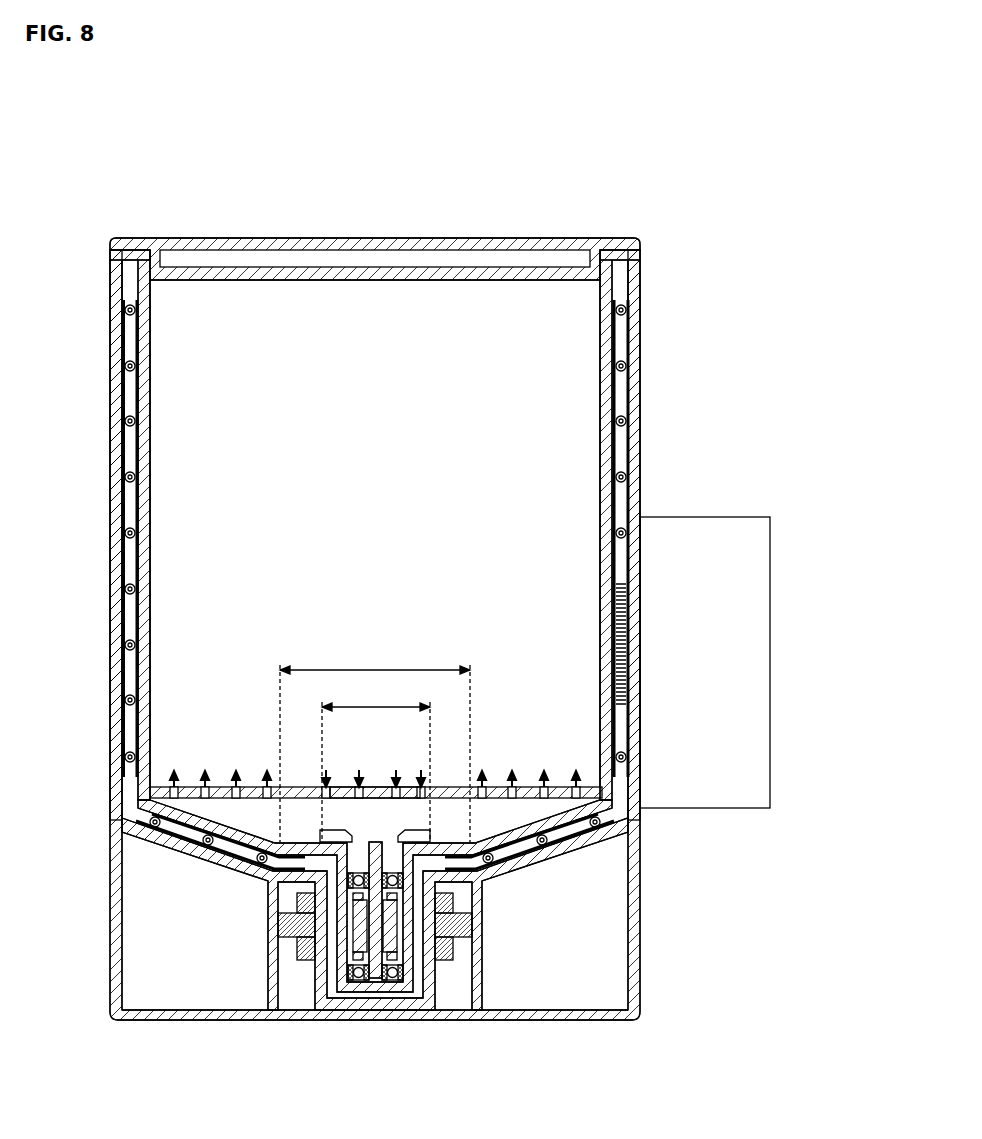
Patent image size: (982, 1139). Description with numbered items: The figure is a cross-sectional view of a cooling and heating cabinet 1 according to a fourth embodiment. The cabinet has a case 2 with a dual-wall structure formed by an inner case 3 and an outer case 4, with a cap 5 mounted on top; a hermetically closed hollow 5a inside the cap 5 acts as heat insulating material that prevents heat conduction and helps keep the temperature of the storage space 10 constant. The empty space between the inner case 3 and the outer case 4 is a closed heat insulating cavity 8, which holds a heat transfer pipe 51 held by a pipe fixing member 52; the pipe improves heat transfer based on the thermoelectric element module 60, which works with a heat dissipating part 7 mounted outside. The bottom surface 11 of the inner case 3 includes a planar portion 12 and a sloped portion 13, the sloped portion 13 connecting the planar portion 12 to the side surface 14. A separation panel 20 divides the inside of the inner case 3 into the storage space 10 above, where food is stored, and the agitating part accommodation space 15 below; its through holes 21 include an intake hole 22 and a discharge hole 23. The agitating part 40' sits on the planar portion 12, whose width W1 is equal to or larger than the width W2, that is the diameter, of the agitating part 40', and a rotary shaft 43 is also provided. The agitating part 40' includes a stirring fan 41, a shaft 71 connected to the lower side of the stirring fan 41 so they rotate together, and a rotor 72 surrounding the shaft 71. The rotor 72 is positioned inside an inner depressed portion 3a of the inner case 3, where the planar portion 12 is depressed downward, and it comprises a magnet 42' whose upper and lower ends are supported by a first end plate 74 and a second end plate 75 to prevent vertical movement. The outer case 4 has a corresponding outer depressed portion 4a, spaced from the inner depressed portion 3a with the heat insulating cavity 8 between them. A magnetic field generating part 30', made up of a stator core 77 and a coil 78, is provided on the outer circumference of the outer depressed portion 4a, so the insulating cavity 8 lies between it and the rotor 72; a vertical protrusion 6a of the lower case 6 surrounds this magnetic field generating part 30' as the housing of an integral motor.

The cooling and heating cabinet 1 is at (582, 165).
The case 2 is at (58, 398).
The inner case 3 is at (145, 410).
The outer case 4 is at (120, 430).
The cap 5 is at (397, 247).
The hollow 5a is at (302, 262).
The lower case 6 is at (120, 920).
The vertical protrusion 6a is at (478, 983).
The heat dissipating part 7 is at (741, 530).
The heat insulating cavity 8 is at (133, 796).
The storage space 10 is at (364, 440).
The bottom surface 11 is at (64, 833).
The planar portion 12 is at (270, 880).
The sloped portion 13 is at (185, 857).
The side surface 14 is at (150, 515).
The agitating part accommodation space 15 is at (528, 788).
The separation panel 20 is at (456, 782).
The through holes 21 is at (205, 708).
The intake hole 22 is at (328, 786).
The discharge hole 23 is at (208, 786).
The magnetic field generating part 30' is at (506, 930).
The inner depressed portion 3a is at (400, 905).
The agitating part 40' is at (393, 844).
The stirring fan 41 is at (432, 840).
The magnet 42' is at (265, 930).
The rotary shaft 43 is at (375, 800).
The outer depressed portion 4a is at (318, 982).
The heat transfer pipe 51 is at (627, 310).
The pipe fixing member 52 is at (630, 330).
The thermoelectric element module 60 is at (642, 630).
The shaft 71 is at (378, 978).
The rotor 72 is at (218, 905).
The first end plate 74 is at (305, 903).
The second end plate 75 is at (305, 948).
The stator core 77 is at (465, 925).
The coil 78 is at (450, 950).
The width of the planar portion W1 is at (375, 742).
The width of the agitating part W2 is at (376, 761).